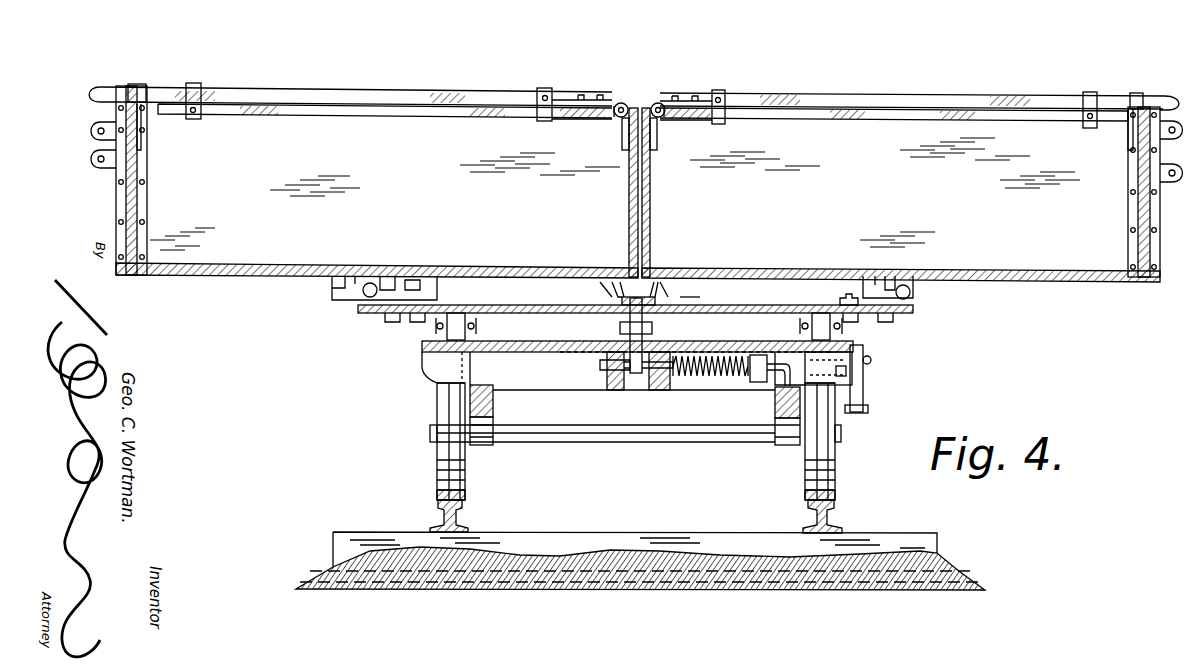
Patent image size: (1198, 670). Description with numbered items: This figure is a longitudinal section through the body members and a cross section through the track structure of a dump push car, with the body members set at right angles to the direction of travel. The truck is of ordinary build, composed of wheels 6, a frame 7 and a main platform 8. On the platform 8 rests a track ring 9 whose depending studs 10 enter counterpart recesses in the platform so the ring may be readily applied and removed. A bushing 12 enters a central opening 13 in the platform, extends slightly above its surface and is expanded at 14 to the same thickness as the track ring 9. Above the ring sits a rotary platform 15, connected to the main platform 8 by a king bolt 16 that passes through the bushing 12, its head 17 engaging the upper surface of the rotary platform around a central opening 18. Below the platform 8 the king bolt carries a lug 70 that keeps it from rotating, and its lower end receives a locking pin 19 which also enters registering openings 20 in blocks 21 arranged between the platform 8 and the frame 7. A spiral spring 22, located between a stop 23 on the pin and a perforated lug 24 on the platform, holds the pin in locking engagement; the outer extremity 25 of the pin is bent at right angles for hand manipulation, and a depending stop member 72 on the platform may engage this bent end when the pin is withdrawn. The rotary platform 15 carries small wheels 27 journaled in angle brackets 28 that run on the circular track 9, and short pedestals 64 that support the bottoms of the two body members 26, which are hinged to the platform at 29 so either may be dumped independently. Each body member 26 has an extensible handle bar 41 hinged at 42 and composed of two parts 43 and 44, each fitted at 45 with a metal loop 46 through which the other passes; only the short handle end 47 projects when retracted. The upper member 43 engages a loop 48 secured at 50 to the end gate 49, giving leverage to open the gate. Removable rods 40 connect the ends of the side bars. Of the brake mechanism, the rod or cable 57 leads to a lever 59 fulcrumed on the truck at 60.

The wheels 6 is at (445, 456).
The frame 7 is at (488, 402).
The main platform 8 is at (450, 378).
The track ring 9 is at (548, 336).
The depending studs 10 is at (430, 362).
The bushing 12 is at (652, 326).
The central opening 13 is at (602, 364).
The expanded portion 14 is at (700, 305).
The rotary platform 15 is at (805, 305).
The king bolt 16 is at (664, 297).
The head 17 is at (652, 282).
The central opening 18 is at (603, 282).
The locking pin 19 is at (759, 384).
The registering openings 20 is at (612, 386).
The blocks 21 is at (630, 372).
The spiral spring 22 is at (706, 443).
The stop 23 is at (692, 351).
The perforated lug 24 is at (715, 377).
The outer extremity 25 is at (845, 378).
The body members 26 is at (638, 210).
The small wheels 27 is at (455, 326).
The angle brackets 28 is at (440, 322).
The hinge connection 29 is at (362, 296).
The rods 40 is at (98, 136).
The extensible handle bar 41 is at (672, 90).
The hinge connection of handle bar 42 is at (658, 103).
The upper member 43 is at (318, 90).
The lower member 44 is at (358, 118).
The loop attachment 45 is at (546, 88).
The metal loop 46 is at (200, 86).
The short handle end 47 is at (104, 88).
The loop 48 is at (140, 85).
The end gate 49 is at (138, 207).
The loop securing point 50 is at (148, 142).
The rod or cable 57 is at (872, 361).
The lever 59 is at (866, 396).
The fulcrum 60 is at (862, 413).
The pedestals 64 is at (616, 282).
The lug 70 is at (629, 322).
The depending stop member 72 is at (848, 372).